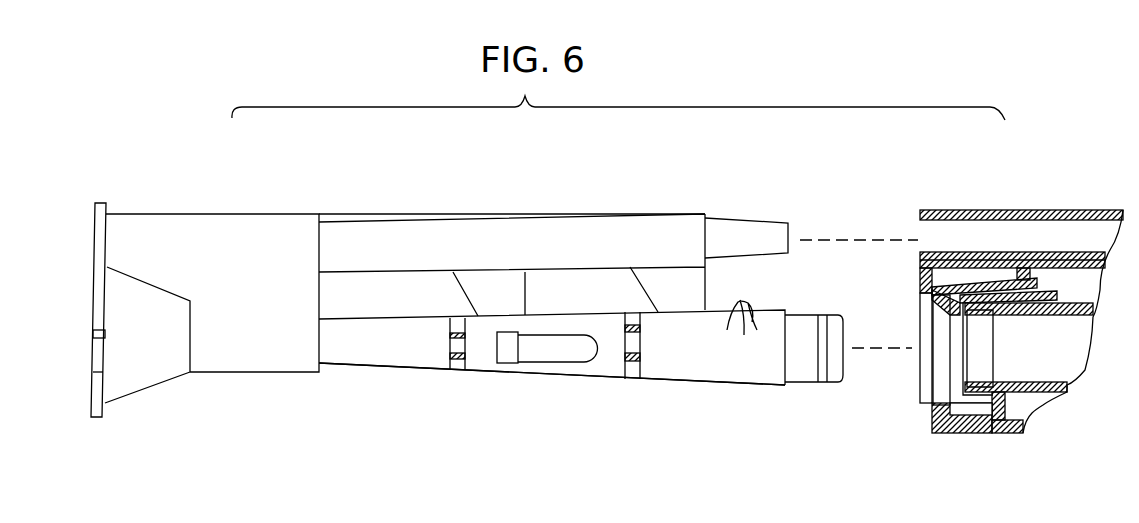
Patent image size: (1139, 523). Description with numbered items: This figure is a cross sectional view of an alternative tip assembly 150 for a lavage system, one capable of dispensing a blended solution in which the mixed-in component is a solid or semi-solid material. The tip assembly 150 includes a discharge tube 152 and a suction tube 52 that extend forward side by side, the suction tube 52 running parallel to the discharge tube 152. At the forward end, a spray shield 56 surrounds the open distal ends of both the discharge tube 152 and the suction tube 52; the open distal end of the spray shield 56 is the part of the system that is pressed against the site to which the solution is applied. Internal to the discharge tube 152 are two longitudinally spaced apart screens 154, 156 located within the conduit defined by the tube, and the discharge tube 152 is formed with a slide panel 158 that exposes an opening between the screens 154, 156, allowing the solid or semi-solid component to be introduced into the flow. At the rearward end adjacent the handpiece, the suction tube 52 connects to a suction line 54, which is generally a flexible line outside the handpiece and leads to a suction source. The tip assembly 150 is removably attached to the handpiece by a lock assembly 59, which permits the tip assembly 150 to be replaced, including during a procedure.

The tip assembly 150 is at (532, 192).
The spray shield 56 is at (219, 267).
The suction tube 52 is at (381, 256).
The discharge tube 152 is at (396, 351).
The screen 154 is at (450, 352).
The screen 156 is at (640, 365).
The slide panel 158 is at (540, 357).
The suction line 54 is at (971, 244).
The lock assembly 59 is at (902, 422).